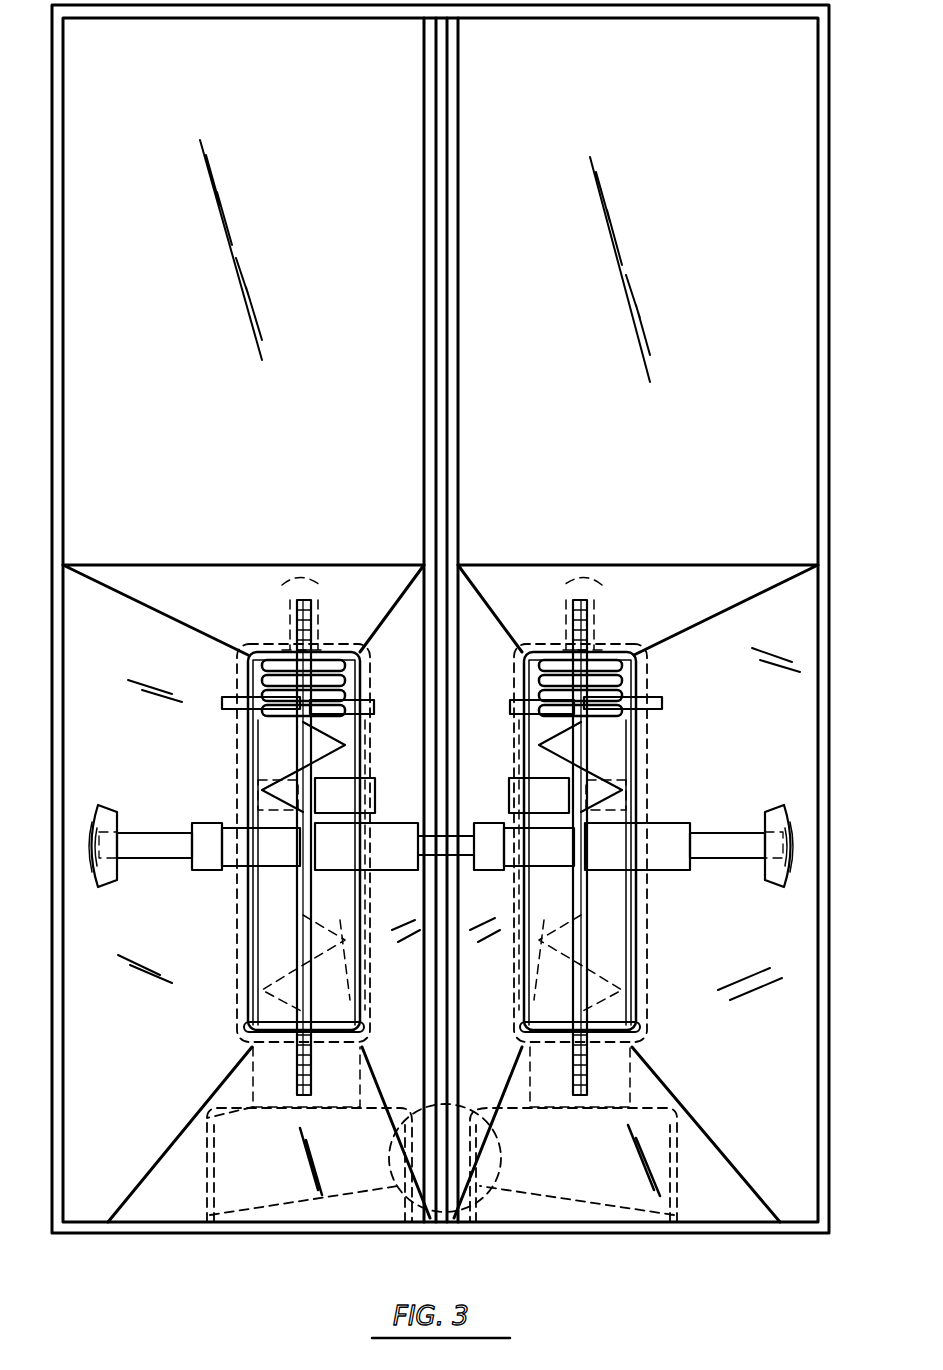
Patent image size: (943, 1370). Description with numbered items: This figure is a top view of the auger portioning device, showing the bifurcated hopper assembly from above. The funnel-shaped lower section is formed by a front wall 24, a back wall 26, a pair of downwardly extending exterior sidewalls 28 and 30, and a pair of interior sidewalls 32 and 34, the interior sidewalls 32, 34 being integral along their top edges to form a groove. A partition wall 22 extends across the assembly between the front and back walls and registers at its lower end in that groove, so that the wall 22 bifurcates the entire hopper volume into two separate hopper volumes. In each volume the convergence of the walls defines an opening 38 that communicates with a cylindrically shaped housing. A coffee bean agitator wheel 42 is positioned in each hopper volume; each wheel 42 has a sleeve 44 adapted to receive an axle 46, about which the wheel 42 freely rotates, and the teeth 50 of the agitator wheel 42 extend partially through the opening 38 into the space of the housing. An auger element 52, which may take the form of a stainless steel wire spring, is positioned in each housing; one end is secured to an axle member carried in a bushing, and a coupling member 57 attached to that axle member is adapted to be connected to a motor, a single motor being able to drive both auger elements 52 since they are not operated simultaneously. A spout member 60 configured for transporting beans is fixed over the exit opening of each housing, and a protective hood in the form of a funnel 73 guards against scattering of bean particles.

The wall 22 is at (470, 442).
The front wall 24 is at (548, 1185).
The back wall 26 is at (640, 318).
The exterior sidewall 28 is at (148, 705).
The exterior sidewall 30 is at (765, 664).
The interior sidewall 32 is at (372, 768).
The interior sidewall 34 is at (505, 770).
The opening 38 is at (262, 740).
The coffee bean agitator wheel 42 is at (320, 600).
The sleeve 44 is at (220, 828).
The axle 46 is at (730, 833).
The teeth 50 is at (297, 620).
The auger element 52 is at (262, 762).
The coupling member 57 is at (285, 580).
The spout member 60 is at (200, 1128).
The funnel 73 is at (700, 1212).